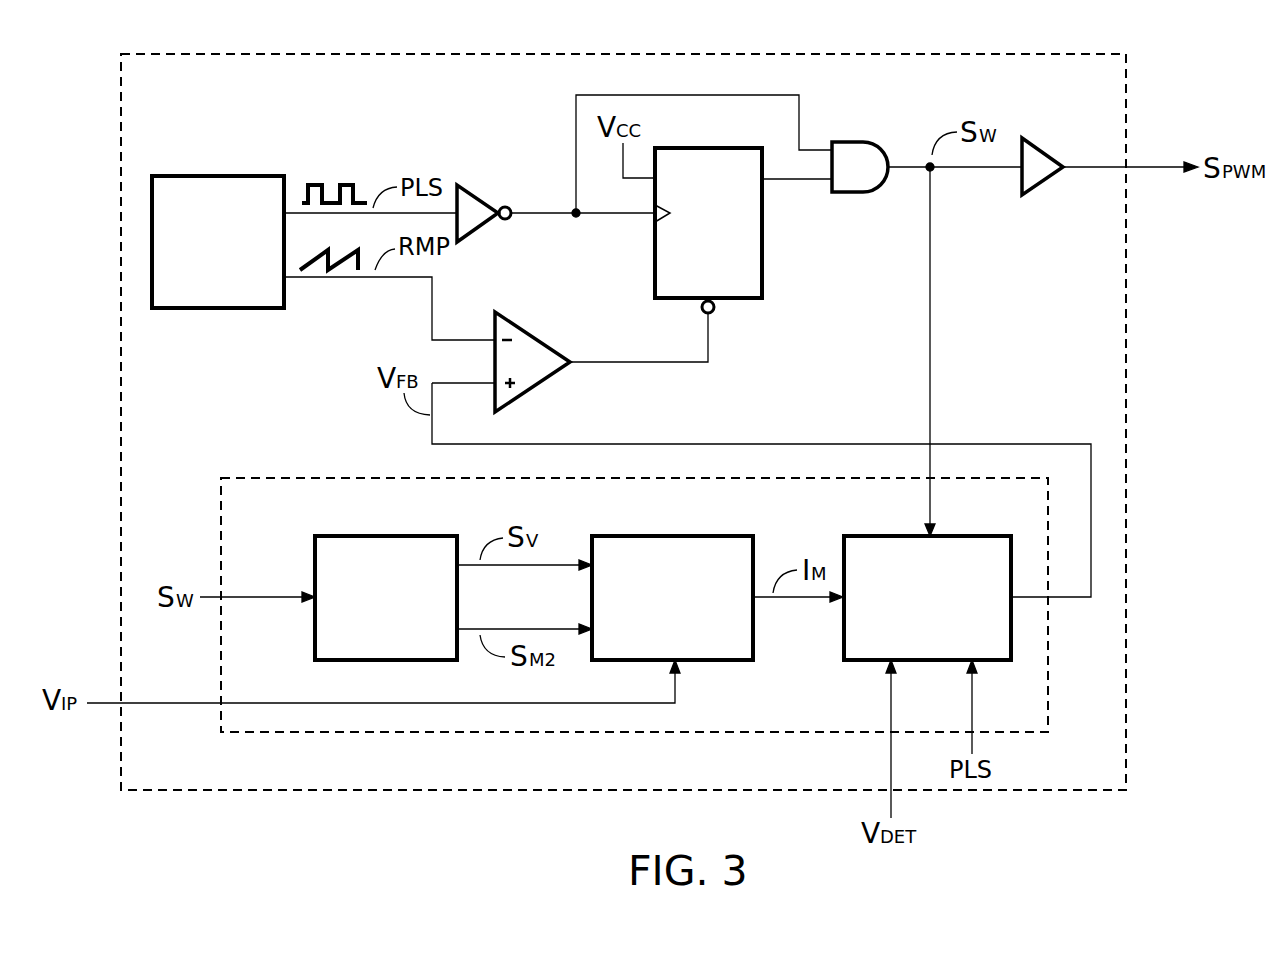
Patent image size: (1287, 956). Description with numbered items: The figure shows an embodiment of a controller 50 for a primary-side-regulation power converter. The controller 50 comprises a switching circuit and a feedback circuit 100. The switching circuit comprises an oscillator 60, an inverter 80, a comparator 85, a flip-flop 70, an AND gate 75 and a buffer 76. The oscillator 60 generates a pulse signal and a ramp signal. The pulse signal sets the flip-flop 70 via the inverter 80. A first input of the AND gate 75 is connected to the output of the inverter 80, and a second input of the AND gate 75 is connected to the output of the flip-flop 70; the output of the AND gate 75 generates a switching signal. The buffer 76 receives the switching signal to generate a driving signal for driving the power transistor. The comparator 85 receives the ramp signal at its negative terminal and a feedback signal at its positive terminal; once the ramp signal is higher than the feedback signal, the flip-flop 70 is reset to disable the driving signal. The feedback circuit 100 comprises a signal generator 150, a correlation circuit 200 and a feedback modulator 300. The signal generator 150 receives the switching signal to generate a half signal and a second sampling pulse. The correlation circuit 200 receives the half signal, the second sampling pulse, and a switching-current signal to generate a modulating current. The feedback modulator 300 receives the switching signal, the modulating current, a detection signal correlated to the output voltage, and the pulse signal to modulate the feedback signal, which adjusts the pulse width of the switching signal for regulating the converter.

The controller 50 is at (1126, 92).
The oscillator 60 is at (207, 175).
The flip-flop 70 is at (762, 265).
The AND gate 75 is at (852, 137).
The buffer 76 is at (1042, 147).
The inverter 80 is at (487, 187).
The comparator 85 is at (533, 337).
The feedback circuit 100 is at (282, 477).
The signal generator 150 is at (362, 533).
The correlation circuit 200 is at (650, 533).
The feedback modulator 300 is at (966, 533).